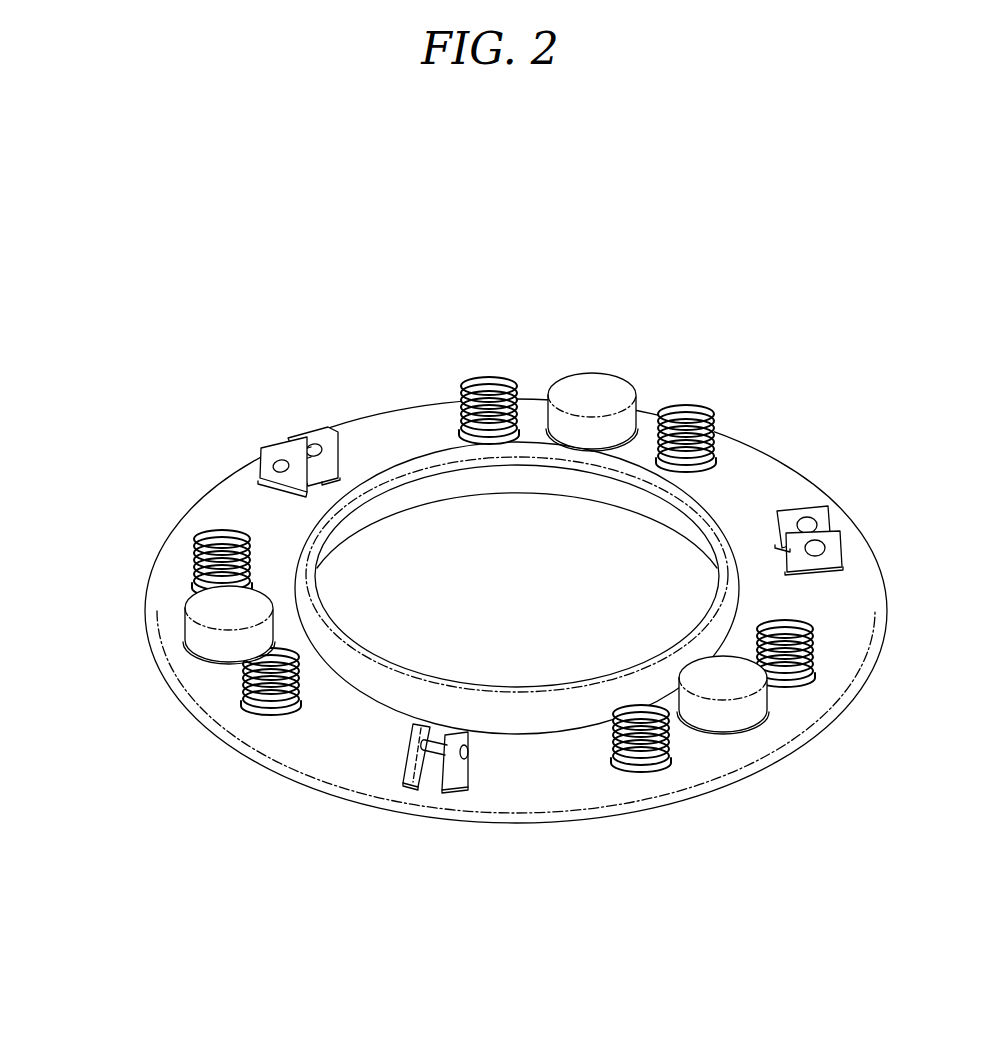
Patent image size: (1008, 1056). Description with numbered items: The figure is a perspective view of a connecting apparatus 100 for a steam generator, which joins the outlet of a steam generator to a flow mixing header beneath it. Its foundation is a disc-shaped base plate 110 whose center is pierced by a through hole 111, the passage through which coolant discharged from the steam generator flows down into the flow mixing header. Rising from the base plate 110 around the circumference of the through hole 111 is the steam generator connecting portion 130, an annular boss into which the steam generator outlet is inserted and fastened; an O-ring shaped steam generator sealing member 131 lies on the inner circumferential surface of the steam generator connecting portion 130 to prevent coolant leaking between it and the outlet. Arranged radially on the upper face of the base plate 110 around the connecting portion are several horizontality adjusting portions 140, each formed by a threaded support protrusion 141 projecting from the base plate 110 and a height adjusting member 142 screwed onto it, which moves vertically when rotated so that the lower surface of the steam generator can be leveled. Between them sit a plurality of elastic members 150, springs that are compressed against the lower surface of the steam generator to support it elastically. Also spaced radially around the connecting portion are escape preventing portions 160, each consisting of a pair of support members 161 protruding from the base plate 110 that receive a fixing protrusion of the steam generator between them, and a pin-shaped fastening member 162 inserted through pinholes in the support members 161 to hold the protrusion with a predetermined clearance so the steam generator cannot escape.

The connecting apparatus for a steam generator 100 is at (803, 218).
The base plate 110 is at (397, 417).
The through hole 111 is at (438, 546).
The steam generator connecting portion 130 is at (676, 493).
The steam generator sealing member 131 is at (630, 470).
The horizontality adjusting portion 140 is at (442, 549).
The support protrusion 141 is at (733, 758).
The height adjusting member 142 is at (764, 731).
The elastic member 150 is at (193, 568).
The escape preventing portion 160 is at (557, 589).
The support member 161 is at (454, 788).
The fastening member 162 is at (408, 742).